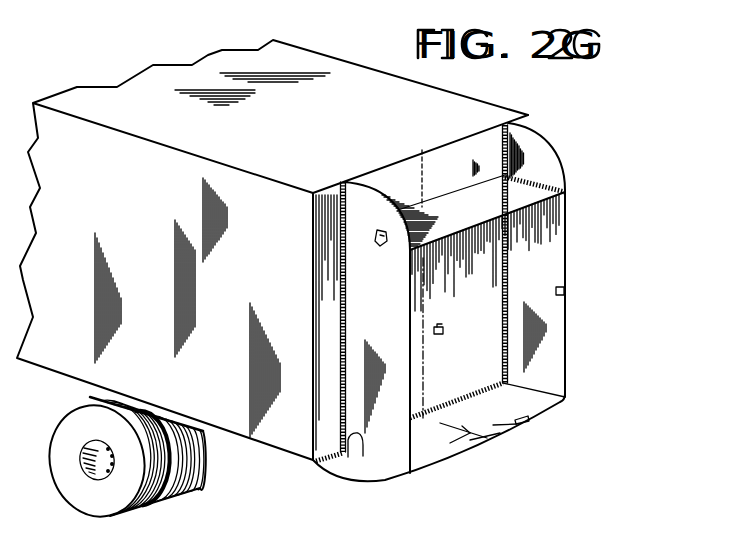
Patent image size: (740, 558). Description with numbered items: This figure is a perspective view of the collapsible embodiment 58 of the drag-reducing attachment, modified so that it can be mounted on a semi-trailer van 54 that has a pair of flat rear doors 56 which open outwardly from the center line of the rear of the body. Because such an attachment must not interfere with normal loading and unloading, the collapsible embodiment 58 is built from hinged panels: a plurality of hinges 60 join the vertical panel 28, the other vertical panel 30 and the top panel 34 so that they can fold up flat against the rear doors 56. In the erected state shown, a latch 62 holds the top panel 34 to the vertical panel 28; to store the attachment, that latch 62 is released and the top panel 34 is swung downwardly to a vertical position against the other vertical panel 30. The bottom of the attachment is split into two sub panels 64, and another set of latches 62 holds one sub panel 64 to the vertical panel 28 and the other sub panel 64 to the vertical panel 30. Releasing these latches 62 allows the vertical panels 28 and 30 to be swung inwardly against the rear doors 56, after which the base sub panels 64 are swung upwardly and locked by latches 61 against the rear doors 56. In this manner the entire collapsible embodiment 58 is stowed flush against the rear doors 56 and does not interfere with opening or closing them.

The vertical panel 28 is at (386, 322).
The vertical panel 30 is at (496, 264).
The top panel 34 is at (492, 216).
The van 54 is at (199, 47).
The rear doors 56 is at (458, 160).
The collapsible embodiment 58 is at (604, 186).
The hinges 60 is at (517, 179).
The latches 61 is at (443, 330).
The latch 62 is at (372, 237).
The sub panels 64 is at (475, 437).